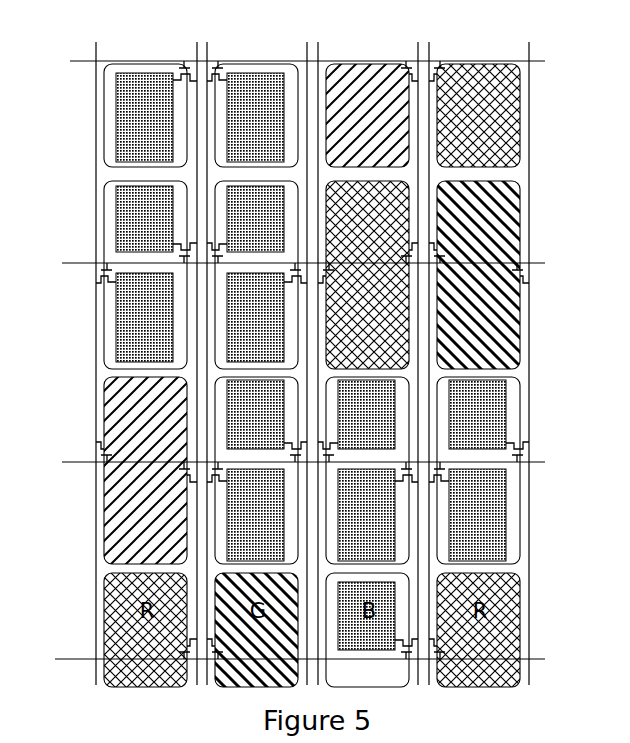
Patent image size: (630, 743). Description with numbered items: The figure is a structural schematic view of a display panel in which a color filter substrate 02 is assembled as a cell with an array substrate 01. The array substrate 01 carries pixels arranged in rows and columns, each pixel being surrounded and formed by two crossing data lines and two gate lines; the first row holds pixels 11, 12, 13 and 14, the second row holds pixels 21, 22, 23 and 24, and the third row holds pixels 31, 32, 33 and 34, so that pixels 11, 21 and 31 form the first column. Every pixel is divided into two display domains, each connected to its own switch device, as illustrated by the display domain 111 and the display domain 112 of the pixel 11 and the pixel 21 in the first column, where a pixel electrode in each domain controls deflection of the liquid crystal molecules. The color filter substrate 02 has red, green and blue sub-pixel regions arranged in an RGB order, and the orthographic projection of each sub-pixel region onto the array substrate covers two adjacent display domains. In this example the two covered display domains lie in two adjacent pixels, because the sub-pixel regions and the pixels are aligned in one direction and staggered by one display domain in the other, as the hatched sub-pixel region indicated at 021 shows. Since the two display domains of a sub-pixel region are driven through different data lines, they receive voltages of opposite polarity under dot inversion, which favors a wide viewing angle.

The array substrate 01 is at (545, 222).
The color filter substrate 02 is at (101, 404).
The sub-pixel of pixel unit 021 is at (108, 531).
The pixel 11 is at (122, 123).
The pixel 12 is at (252, 123).
The pixel 13 is at (372, 123).
The pixel 14 is at (474, 123).
The pixel 21 is at (122, 282).
The pixel 22 is at (257, 282).
The pixel 23 is at (368, 282).
The pixel 24 is at (479, 282).
The pixel 31 is at (110, 479).
The pixel 32 is at (257, 479).
The pixel 33 is at (368, 479).
The pixel 34 is at (479, 479).
The display domain 111 is at (132, 120).
The display domain 112 is at (133, 200).